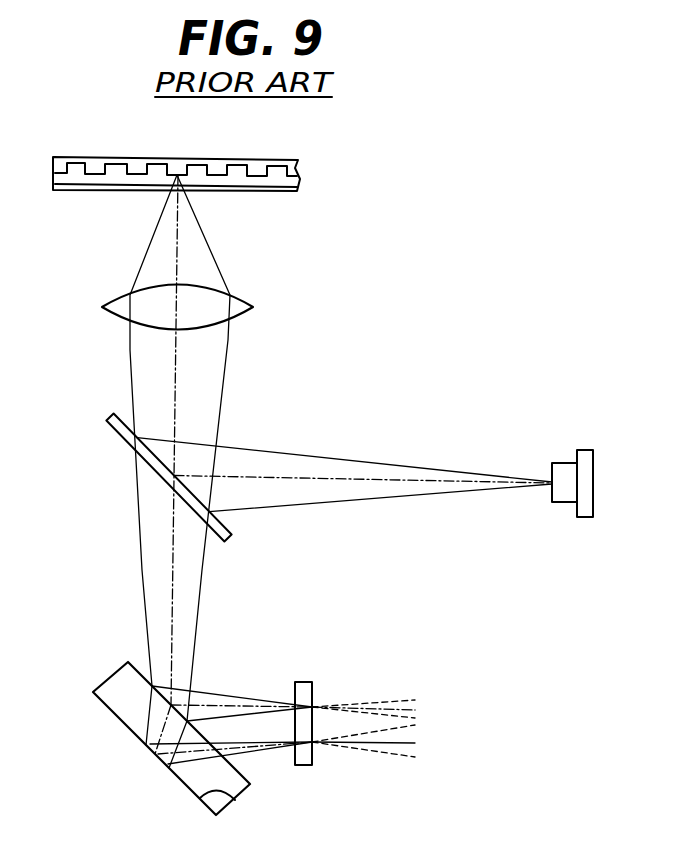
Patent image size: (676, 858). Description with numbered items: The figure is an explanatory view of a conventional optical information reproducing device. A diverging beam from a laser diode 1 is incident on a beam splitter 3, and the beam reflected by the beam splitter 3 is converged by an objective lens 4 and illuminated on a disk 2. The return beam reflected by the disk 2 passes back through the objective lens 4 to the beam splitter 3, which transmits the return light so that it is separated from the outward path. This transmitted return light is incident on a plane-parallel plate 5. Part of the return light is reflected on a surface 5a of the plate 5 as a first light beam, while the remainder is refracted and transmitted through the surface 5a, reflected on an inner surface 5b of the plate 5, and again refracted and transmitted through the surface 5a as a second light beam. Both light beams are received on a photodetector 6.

The laser diode 1 is at (565, 463).
The disk 2 is at (170, 157).
The beam splitter 3 is at (108, 428).
The objective lens 4 is at (102, 307).
The plane-parallel plate 5 is at (166, 720).
The surface of the plate 5a is at (137, 661).
The inner surface of the plate 5b is at (235, 800).
The photodetector 6 is at (303, 682).